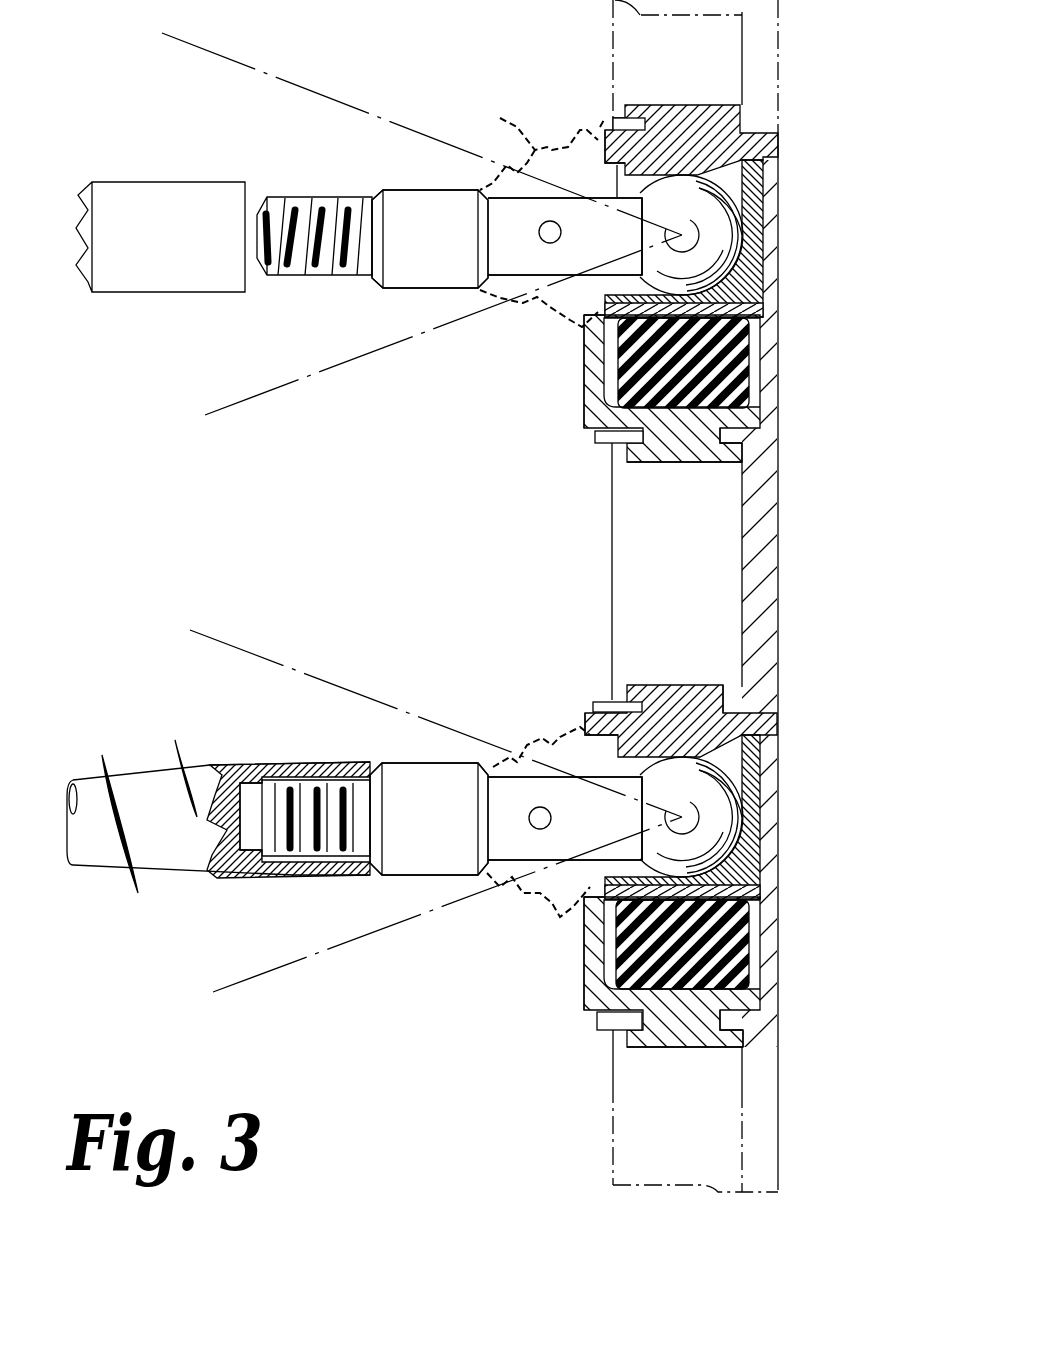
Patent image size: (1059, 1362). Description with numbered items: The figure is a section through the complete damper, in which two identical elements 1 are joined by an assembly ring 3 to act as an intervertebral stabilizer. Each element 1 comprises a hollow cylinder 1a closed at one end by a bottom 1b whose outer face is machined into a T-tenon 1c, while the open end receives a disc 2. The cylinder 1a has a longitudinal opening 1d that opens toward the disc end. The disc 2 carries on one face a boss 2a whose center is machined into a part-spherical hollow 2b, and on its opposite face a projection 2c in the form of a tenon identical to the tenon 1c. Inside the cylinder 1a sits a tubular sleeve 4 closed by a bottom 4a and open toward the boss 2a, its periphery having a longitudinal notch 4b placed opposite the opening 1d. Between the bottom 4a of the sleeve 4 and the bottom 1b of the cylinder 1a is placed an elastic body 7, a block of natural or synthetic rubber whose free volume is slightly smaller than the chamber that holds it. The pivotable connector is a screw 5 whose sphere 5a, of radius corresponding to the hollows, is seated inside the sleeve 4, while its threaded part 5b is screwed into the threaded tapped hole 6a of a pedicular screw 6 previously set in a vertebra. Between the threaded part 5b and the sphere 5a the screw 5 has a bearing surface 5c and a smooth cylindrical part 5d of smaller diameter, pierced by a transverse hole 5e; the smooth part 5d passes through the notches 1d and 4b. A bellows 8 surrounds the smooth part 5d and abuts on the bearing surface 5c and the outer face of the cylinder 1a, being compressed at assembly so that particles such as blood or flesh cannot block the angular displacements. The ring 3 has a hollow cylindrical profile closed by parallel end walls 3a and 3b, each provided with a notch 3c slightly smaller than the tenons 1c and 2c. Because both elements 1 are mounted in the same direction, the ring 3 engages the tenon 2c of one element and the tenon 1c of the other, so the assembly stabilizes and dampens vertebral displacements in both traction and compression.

The element 1 is at (535, 418).
The hollow cylinder 1a is at (590, 387).
The bottom 1b is at (766, 442).
The T-tenon 1c is at (705, 463).
The longitudinal opening 1d is at (590, 305).
The disc 2 is at (780, 143).
The boss 2a is at (618, 163).
The hollow 2b is at (702, 190).
The projection 2c is at (632, 118).
The assembly ring 3 is at (765, 553).
The end wall 3a is at (748, 431).
The end wall 3b is at (727, 682).
The notch 3c is at (592, 450).
The tubular sleeve 4 is at (752, 243).
The bottom 4a is at (747, 311).
The longitudinal notch 4b is at (627, 288).
The screw 5 is at (338, 174).
The sphere 5a is at (715, 268).
The threaded part 5b is at (273, 272).
The bearing surface 5c is at (393, 272).
The smooth cylindrical part 5d is at (497, 224).
The transverse hole 5e is at (586, 303).
The pedicular screw 6 is at (141, 158).
The threaded tapped hole 6a is at (290, 878).
The elastic body 7 is at (703, 368).
The bellows 8 is at (485, 940).